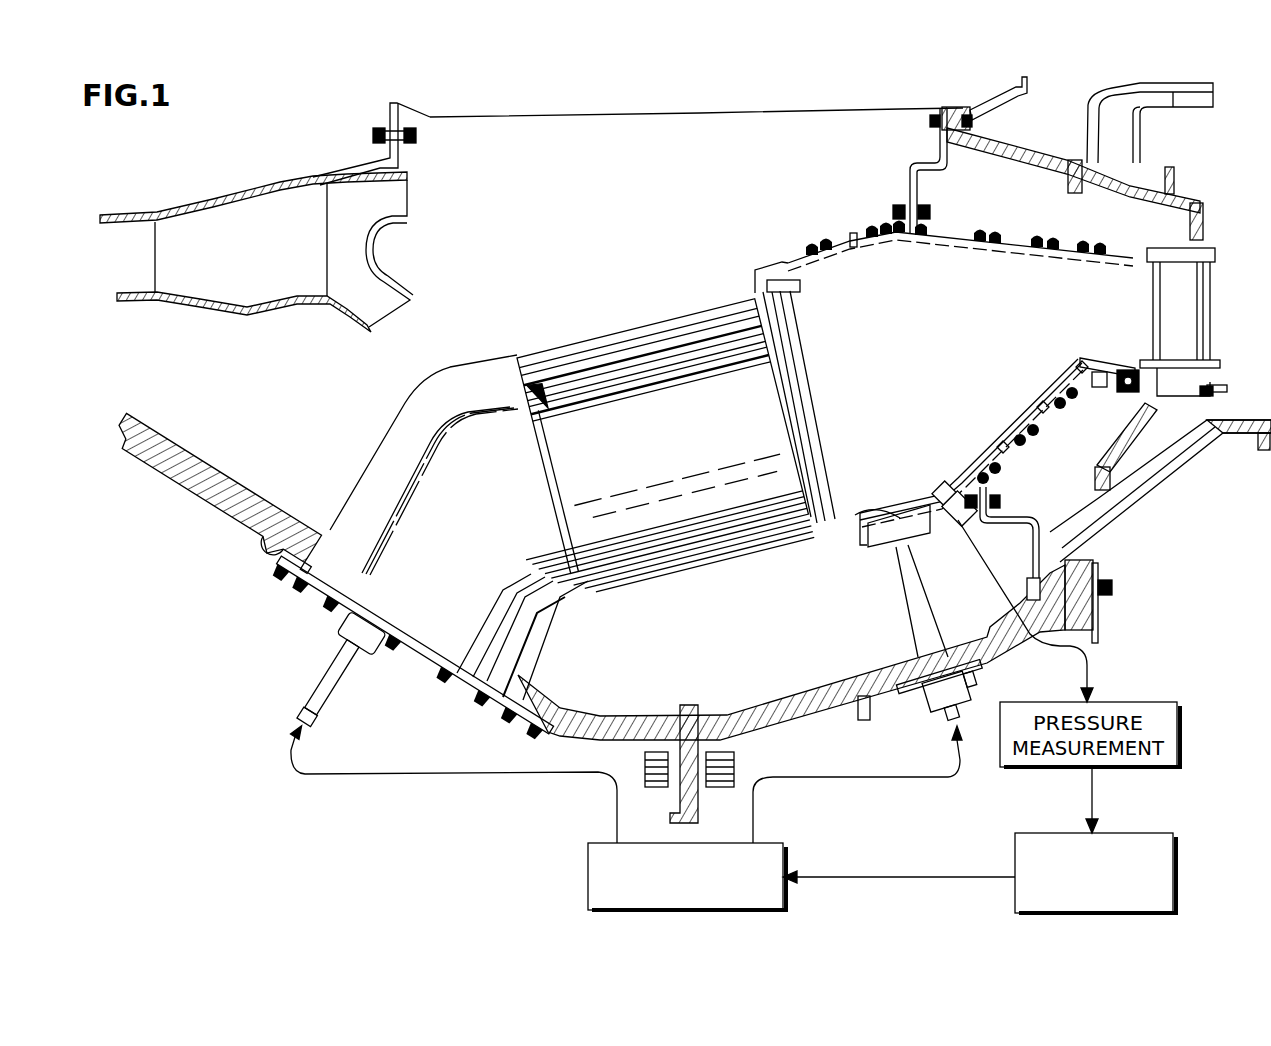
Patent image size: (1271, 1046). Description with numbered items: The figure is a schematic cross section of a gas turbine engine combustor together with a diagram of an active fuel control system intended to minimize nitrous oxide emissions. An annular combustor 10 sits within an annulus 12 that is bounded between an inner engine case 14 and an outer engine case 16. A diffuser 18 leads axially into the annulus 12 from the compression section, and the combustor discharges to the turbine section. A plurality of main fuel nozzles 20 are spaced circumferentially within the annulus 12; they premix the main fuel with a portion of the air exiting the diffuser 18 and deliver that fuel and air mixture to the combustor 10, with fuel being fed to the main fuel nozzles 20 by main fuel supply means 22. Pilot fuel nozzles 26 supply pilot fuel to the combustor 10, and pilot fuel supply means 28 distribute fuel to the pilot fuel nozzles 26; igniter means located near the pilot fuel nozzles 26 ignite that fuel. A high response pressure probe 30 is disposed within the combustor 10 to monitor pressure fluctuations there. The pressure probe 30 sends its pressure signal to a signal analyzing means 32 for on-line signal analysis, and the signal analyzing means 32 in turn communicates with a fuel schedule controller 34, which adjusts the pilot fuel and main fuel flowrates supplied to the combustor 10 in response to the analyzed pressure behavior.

The annular combustor 10 is at (1038, 349).
The annulus 12 is at (726, 201).
The inner engine case 14 is at (510, 113).
The outer engine case 16 is at (825, 695).
The diffuser 18 is at (343, 410).
The main fuel nozzles 20 is at (640, 334).
The main fuel supply means 22 is at (326, 693).
The pilot fuel nozzles 26 is at (895, 520).
The pilot fuel supply means 28 is at (940, 720).
The high response pressure probe 30 is at (933, 483).
The signal analyzing means 32 is at (1142, 833).
The fuel schedule controller 34 is at (587, 875).